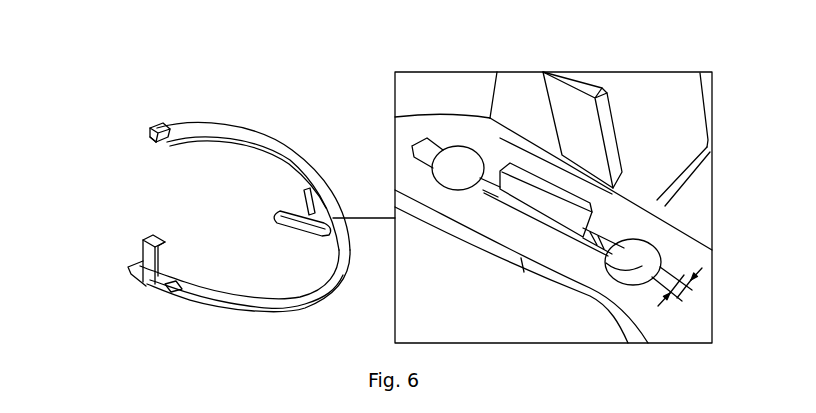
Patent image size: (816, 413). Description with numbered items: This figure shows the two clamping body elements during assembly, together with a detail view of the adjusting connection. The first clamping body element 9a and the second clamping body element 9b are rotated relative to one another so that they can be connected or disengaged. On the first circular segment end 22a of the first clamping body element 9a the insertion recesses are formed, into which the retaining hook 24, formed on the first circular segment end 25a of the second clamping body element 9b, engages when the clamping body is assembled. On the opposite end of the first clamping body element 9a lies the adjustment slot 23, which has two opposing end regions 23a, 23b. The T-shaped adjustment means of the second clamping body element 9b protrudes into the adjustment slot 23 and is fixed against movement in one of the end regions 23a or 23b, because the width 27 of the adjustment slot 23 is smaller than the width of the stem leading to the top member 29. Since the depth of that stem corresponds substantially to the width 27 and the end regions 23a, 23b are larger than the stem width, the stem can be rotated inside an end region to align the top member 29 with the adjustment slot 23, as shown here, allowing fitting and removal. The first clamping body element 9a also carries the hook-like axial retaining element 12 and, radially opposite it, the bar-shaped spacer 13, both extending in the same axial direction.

The first clamping body element 9a is at (224, 313).
The second clamping body element 9b is at (248, 128).
The retaining element 12 is at (152, 237).
The spacer 13 is at (320, 207).
The first circular segment end 22a is at (130, 260).
The adjustment slot 23 is at (610, 252).
The end region 23a is at (634, 266).
The end region 23b is at (457, 172).
The retaining hook 24 is at (155, 127).
The first circular segment end 25a is at (150, 142).
The width 27 is at (690, 305).
The top member 29 is at (535, 185).